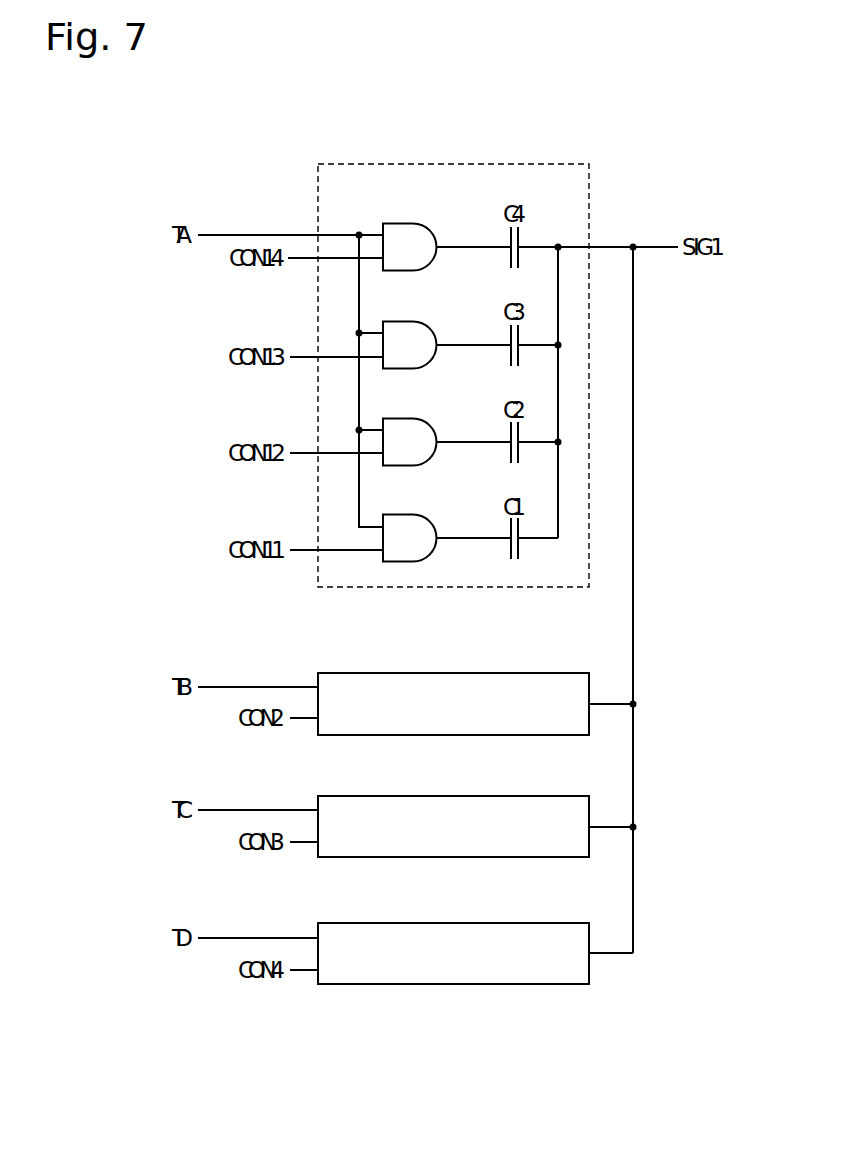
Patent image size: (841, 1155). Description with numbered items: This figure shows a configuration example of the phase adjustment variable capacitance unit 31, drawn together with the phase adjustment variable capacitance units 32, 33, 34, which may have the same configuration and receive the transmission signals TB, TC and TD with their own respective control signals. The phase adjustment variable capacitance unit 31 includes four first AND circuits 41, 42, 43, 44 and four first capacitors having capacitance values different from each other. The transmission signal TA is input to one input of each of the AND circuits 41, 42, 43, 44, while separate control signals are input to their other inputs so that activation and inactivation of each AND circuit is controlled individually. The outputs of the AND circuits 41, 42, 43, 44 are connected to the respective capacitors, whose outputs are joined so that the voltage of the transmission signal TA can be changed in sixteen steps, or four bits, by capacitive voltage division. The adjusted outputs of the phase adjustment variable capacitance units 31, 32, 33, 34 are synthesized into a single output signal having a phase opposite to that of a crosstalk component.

The phase adjustment variable capacitance unit 31 is at (570, 163).
The phase adjustment variable capacitance unit 32 is at (518, 673).
The phase adjustment variable capacitance unit 33 is at (518, 796).
The phase adjustment variable capacitance unit 34 is at (518, 923).
The AND circuit 41 is at (428, 517).
The AND circuit 42 is at (428, 420).
The AND circuit 43 is at (428, 323).
The AND circuit 44 is at (428, 225).